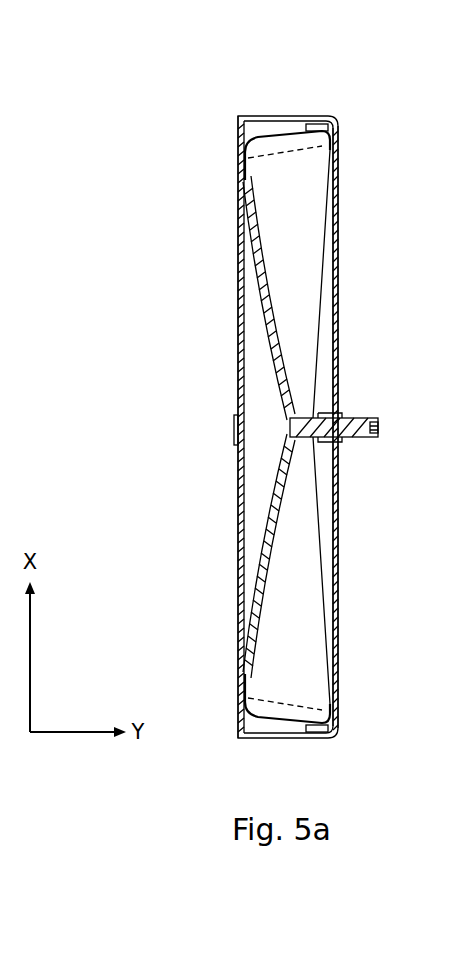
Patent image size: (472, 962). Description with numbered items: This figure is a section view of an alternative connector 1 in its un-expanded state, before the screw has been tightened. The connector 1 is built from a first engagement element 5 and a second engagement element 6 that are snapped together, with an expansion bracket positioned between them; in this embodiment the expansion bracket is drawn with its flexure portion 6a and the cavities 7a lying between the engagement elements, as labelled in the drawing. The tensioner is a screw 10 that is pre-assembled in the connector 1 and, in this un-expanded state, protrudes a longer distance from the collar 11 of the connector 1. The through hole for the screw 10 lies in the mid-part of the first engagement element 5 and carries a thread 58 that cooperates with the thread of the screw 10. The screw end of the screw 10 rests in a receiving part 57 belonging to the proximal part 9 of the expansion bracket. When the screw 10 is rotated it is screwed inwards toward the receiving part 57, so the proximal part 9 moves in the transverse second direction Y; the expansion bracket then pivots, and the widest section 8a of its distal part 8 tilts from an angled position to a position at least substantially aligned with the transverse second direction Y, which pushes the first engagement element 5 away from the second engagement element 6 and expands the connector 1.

The connector 1 is at (340, 103).
The first engagement element 5 is at (340, 586).
The second engagement element 6 is at (238, 550).
The diagonal flexure strip 6a is at (252, 305).
The cavity 7a is at (308, 240).
The distal part 8 is at (260, 132).
The widest section 8a is at (328, 150).
The proximal part 9 is at (308, 390).
The screw 10 is at (353, 418).
The collar 11 is at (236, 415).
The receiving part 57 is at (282, 432).
The thread 58 is at (330, 447).